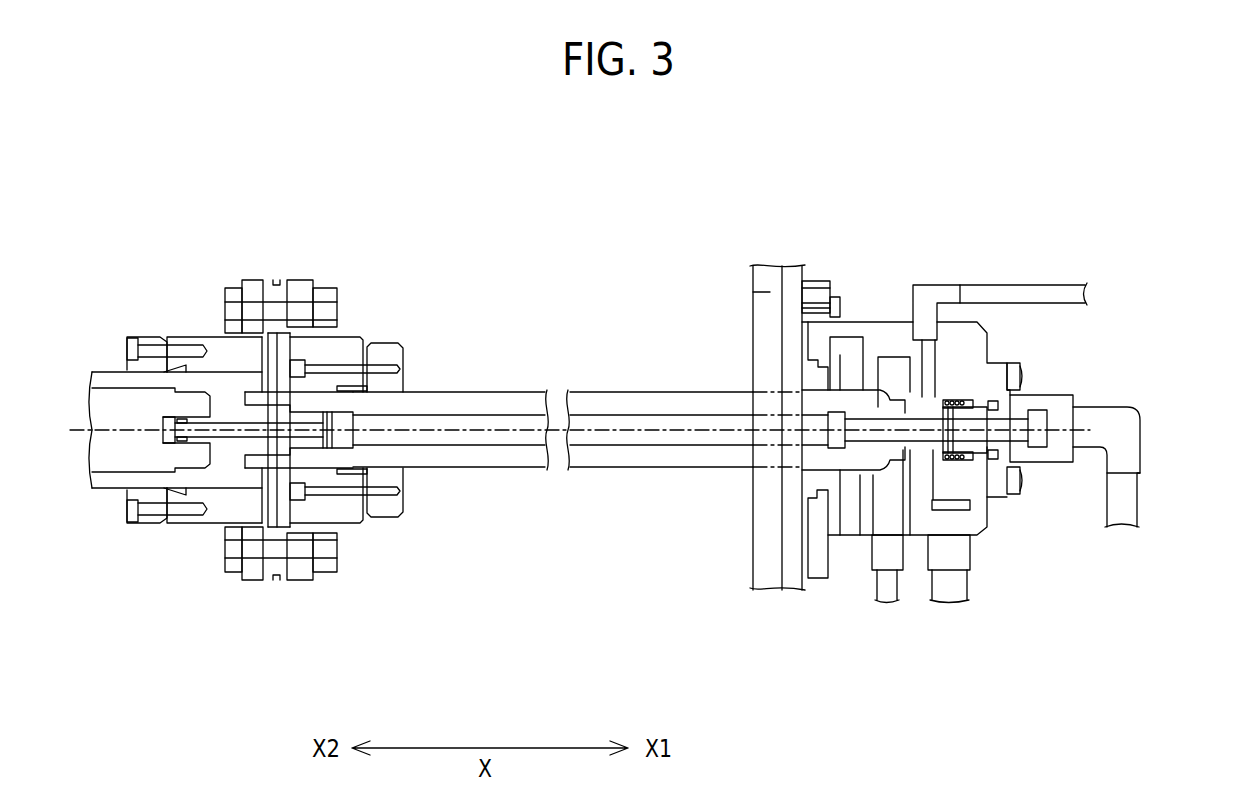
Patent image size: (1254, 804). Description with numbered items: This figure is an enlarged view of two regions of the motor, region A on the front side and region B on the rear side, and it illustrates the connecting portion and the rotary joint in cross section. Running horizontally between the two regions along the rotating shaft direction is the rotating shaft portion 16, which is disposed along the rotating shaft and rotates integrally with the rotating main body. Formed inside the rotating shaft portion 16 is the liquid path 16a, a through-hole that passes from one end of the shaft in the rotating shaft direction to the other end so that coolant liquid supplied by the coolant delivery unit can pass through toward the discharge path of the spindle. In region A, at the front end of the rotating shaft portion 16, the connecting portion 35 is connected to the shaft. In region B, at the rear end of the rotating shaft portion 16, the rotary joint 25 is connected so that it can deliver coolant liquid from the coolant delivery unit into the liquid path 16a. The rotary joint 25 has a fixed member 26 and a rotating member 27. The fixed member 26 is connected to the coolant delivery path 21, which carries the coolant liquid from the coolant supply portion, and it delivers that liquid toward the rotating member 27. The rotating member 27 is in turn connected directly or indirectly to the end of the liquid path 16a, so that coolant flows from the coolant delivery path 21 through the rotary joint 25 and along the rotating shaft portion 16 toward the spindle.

The rotating shaft portion 16 is at (613, 392).
The liquid path 16a is at (613, 435).
The coolant delivery path 21 is at (1127, 502).
The rotary joint 25 is at (1093, 613).
The fixed member 26 is at (1033, 457).
The rotating member 27 is at (895, 458).
The connecting portion 35 is at (230, 453).
The region A is at (154, 238).
The region B is at (958, 190).